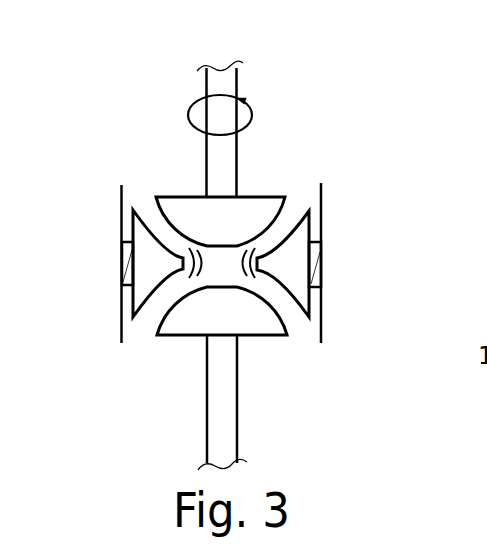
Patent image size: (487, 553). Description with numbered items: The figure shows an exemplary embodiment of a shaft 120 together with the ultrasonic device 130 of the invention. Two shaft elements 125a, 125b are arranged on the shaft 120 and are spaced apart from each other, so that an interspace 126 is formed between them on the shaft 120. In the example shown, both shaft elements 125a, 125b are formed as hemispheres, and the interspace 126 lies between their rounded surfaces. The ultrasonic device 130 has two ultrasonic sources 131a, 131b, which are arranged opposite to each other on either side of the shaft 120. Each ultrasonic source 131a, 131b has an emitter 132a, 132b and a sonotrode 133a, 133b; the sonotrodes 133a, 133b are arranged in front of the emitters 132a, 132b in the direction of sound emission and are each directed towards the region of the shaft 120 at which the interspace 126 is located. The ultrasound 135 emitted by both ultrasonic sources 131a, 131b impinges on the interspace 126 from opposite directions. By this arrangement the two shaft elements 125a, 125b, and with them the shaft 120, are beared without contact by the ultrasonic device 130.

The shaft 120 is at (222, 83).
The shaft element 125a is at (258, 208).
The shaft element 125b is at (253, 322).
The interspace 126 is at (265, 289).
The ultrasonic device 130 is at (250, 223).
The ultrasonic source 131a is at (136, 184).
The ultrasonic source 131b is at (316, 180).
The emitter 132a is at (127, 272).
The emitter 132b is at (368, 260).
The sonotrode 133a is at (147, 237).
The sonotrode 133b is at (295, 242).
The ultrasound 135 is at (182, 286).